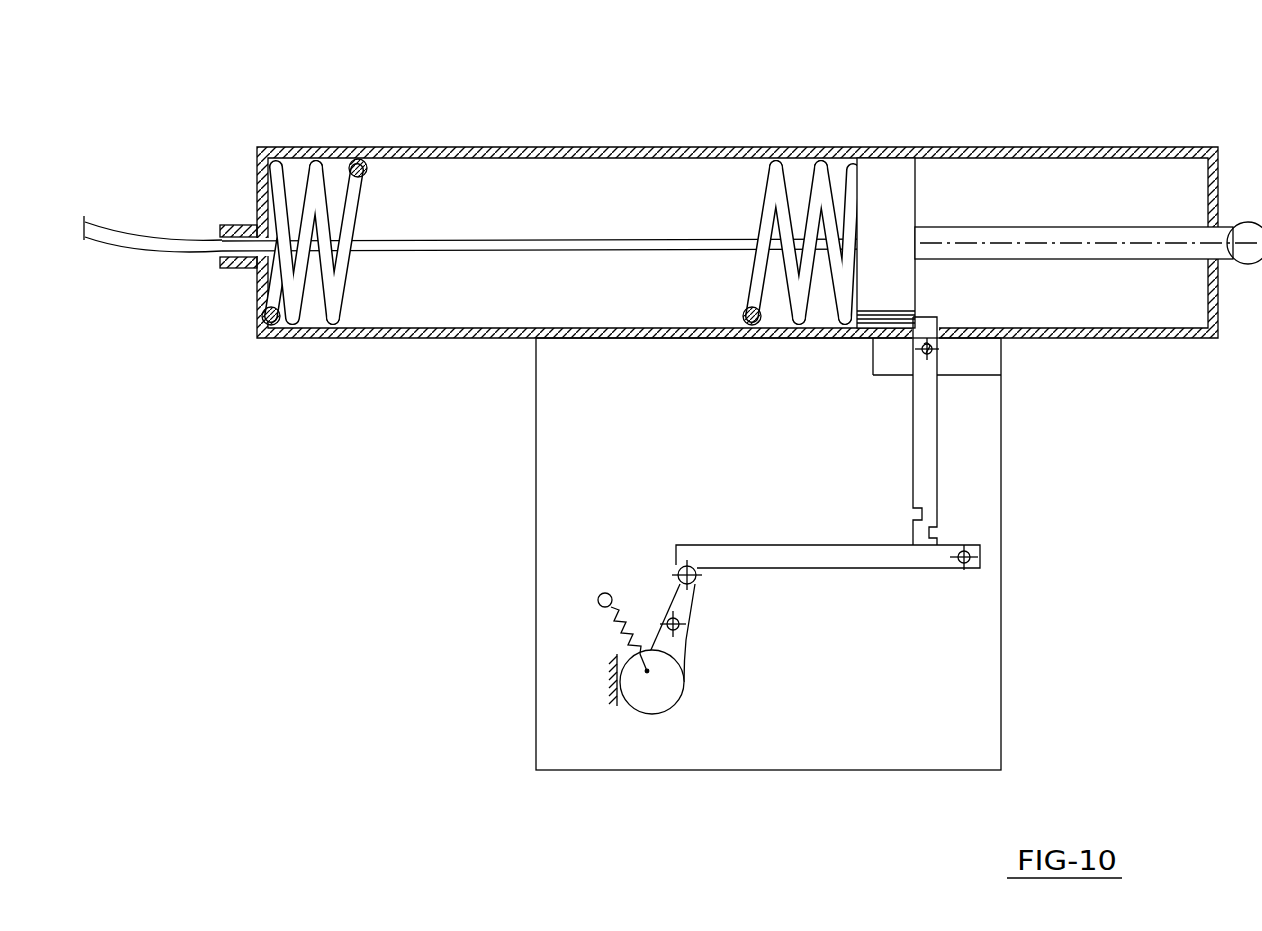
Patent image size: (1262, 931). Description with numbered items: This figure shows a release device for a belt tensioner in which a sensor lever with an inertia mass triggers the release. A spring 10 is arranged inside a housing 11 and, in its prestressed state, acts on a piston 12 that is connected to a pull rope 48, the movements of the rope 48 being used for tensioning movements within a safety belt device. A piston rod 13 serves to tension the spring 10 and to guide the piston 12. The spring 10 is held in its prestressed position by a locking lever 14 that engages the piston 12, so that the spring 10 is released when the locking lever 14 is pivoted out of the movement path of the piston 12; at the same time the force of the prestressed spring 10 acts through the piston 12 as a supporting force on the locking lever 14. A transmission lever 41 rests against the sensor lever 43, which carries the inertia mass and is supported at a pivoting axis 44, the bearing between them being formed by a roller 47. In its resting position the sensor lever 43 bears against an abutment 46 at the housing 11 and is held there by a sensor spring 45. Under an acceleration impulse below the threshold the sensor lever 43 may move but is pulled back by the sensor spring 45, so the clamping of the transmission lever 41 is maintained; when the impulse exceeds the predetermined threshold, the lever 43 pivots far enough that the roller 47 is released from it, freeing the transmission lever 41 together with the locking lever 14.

The spring 10 is at (784, 147).
The housing 11 is at (503, 147).
The piston 12 is at (880, 172).
The piston rod 13 is at (1032, 228).
The locking lever 14 is at (932, 480).
The transmission lever 41 is at (938, 563).
The sensor lever 43 is at (648, 703).
The pivoting axis 44 is at (683, 636).
The sensor spring 45 is at (605, 622).
The abutment 46 is at (616, 682).
The roller 47 is at (678, 573).
The pull rope 48 is at (118, 227).